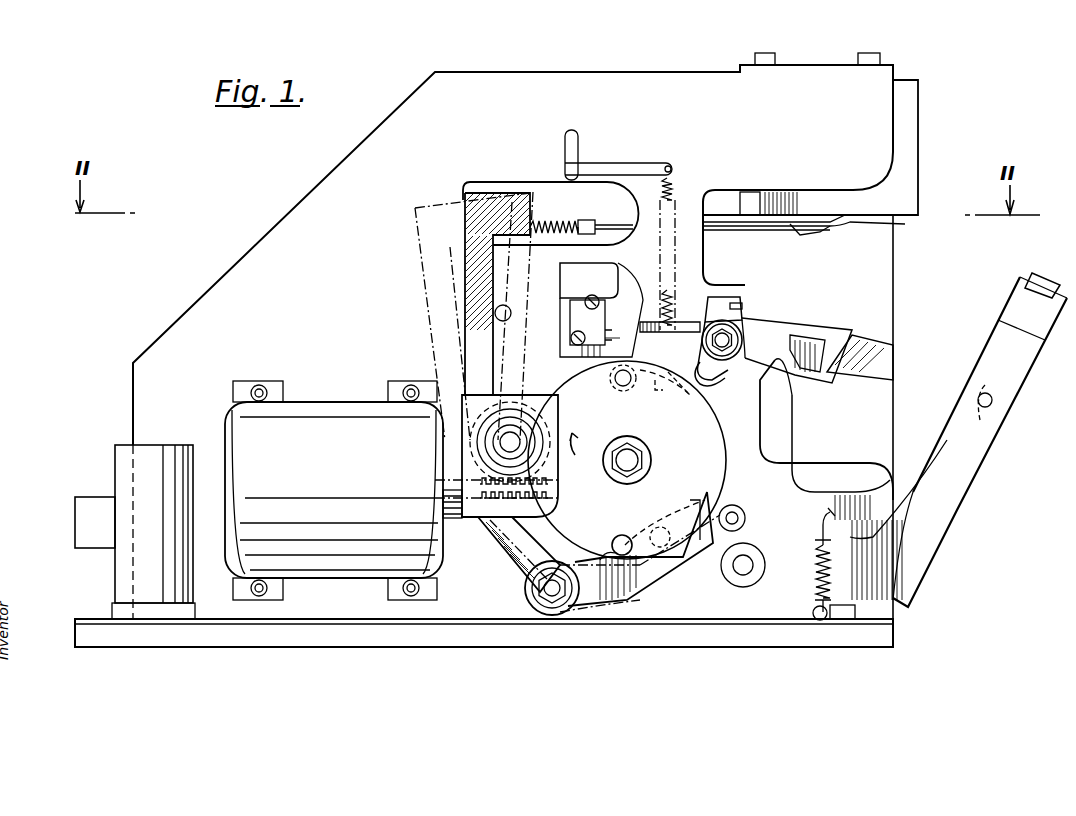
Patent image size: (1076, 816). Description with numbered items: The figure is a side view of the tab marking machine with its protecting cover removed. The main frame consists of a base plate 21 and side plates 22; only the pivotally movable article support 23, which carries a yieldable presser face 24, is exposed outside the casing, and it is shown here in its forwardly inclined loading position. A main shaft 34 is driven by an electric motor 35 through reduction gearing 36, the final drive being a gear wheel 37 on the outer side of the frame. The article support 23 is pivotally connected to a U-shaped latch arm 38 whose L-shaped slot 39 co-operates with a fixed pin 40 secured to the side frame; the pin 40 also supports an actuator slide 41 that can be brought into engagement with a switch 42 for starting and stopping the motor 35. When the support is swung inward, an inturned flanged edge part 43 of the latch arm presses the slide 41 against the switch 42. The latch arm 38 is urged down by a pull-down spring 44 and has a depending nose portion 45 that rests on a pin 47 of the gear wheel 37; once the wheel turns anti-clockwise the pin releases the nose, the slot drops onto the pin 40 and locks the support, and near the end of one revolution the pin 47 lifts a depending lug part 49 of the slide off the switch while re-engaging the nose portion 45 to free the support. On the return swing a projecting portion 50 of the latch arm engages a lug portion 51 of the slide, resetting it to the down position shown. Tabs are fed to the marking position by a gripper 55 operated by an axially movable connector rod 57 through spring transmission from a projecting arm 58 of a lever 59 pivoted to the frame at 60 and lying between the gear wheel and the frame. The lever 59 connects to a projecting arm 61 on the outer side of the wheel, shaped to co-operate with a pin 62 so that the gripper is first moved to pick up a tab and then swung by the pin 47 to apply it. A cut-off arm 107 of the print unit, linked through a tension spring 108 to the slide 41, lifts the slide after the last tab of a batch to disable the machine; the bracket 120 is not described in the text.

The base plate 21 is at (733, 632).
The side plates 22 is at (248, 268).
The article support 23 is at (1012, 388).
The yieldable presser face 24 is at (1045, 280).
The main shaft 34 is at (650, 460).
The electric motor 35 is at (318, 408).
The reduction gearing 36 is at (520, 400).
The gear wheel 37 is at (718, 486).
The U-shaped latch arm 38 is at (820, 422).
The L-shaped slot 39 is at (795, 336).
The fixed pin 40 is at (740, 332).
The actuator slide 41 is at (685, 314).
The switch 42 is at (600, 290).
The inturned flanged edge part 43 is at (855, 347).
The pull-down spring 44 is at (832, 574).
The depending nose portion 45 is at (720, 380).
The pin 47 is at (623, 388).
The depending lug part 49 is at (670, 386).
The projecting portion 50 is at (720, 296).
The lug portion 51 is at (740, 305).
The gripper 55 is at (884, 232).
The connector rod 57 is at (613, 228).
The projecting arm 58 is at (540, 185).
The lever 59 is at (470, 288).
The pivot 60 is at (540, 590).
The projecting arm 61 is at (620, 598).
The pin 62 is at (625, 535).
The cut-off arm 107 is at (648, 164).
The tension spring 108 is at (675, 192).
The mounting bracket 120 is at (908, 108).